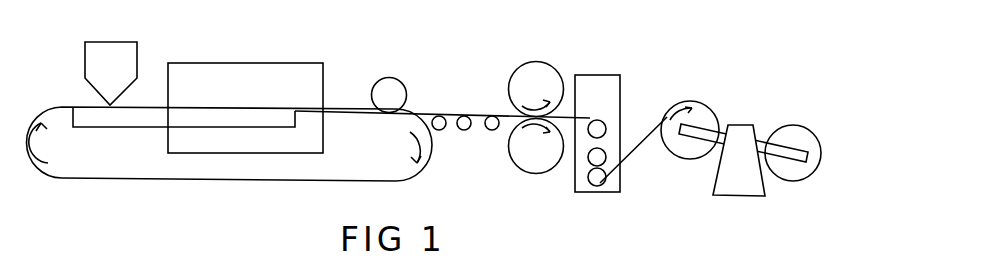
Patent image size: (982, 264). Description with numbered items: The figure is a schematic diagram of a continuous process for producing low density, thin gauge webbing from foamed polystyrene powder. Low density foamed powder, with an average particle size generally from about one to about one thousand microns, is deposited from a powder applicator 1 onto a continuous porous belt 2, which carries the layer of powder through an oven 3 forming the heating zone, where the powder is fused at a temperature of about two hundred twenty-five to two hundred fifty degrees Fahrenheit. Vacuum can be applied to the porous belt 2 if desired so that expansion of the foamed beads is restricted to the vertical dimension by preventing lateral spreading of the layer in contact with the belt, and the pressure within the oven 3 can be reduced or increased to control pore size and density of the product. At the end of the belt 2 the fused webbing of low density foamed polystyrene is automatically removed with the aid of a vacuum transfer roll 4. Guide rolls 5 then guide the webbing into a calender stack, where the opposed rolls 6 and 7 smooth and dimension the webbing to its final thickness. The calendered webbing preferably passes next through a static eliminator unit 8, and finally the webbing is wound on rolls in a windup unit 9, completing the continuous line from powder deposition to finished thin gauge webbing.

The powder applicator 1 is at (137, 56).
The continuous porous belt 2 is at (167, 180).
The oven 3 is at (292, 65).
The vacuum transfer roll 4 is at (402, 80).
The guide rolls 5 is at (490, 131).
The calender roll 6 is at (558, 65).
The calender roll 7 is at (525, 172).
The static eliminator unit 8 is at (622, 90).
The windup unit 9 is at (742, 123).